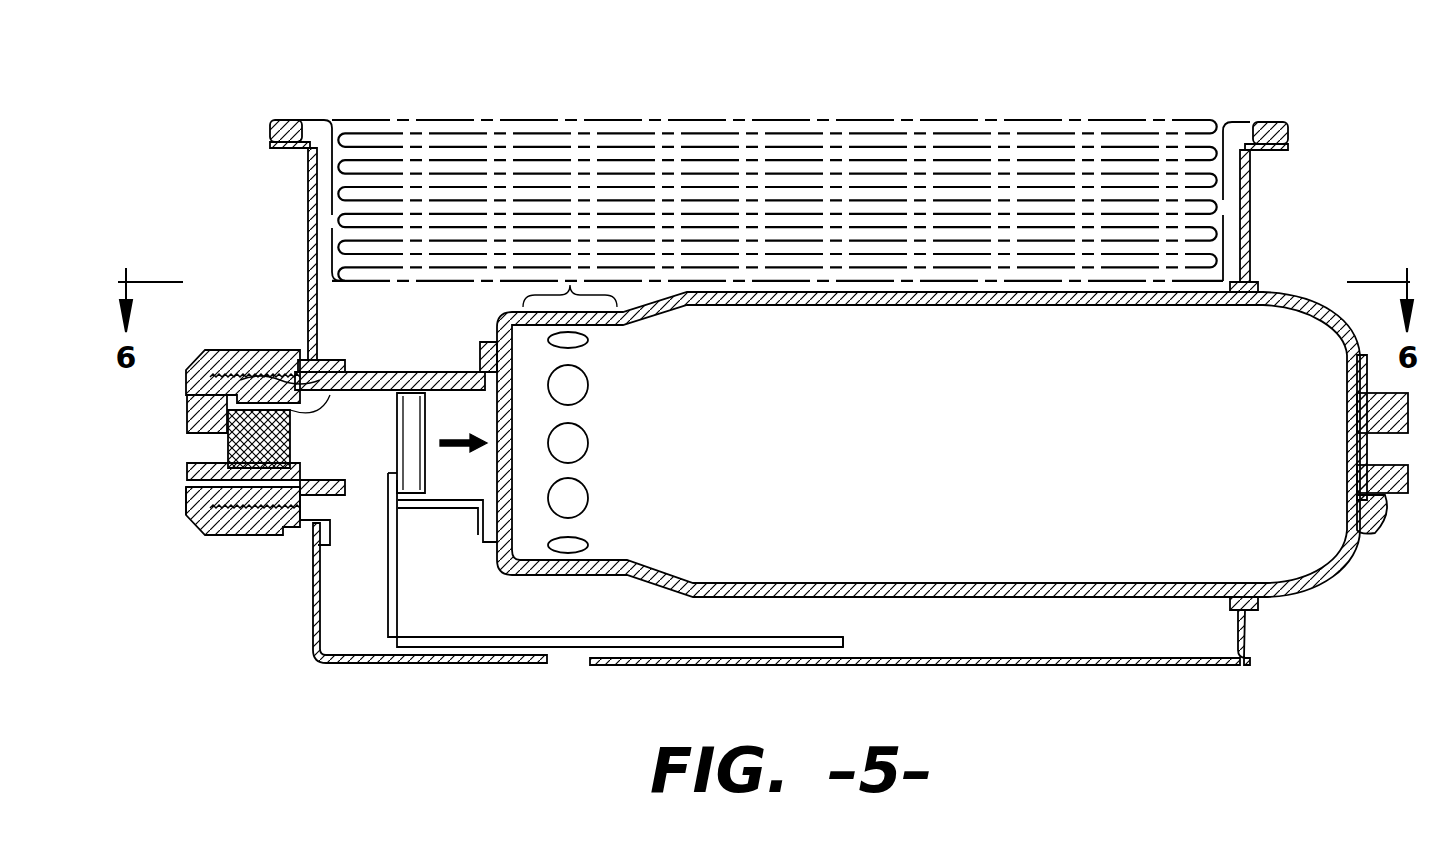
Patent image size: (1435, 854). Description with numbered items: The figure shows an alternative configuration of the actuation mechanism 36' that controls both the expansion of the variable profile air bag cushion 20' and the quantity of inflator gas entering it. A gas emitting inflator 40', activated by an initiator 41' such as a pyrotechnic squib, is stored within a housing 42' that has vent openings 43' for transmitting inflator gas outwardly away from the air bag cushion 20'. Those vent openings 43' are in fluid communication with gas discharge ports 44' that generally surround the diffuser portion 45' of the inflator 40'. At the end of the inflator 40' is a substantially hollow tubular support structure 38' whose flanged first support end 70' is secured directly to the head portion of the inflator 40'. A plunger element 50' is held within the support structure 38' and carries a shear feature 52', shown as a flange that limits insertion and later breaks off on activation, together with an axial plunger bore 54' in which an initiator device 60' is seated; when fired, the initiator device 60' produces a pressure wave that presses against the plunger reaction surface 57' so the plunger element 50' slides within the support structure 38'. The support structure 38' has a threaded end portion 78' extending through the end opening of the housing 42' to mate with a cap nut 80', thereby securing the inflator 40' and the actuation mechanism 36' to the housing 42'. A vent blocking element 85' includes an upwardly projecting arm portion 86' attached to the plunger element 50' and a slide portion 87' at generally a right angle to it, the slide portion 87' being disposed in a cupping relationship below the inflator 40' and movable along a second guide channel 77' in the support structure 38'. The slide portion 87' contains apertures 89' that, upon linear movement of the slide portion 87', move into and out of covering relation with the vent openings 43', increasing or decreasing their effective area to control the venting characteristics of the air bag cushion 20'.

The air bag cushion 20' is at (779, 208).
The actuation mechanism 36' is at (357, 314).
The support structure 38' is at (311, 524).
The gas emitting inflator 40' is at (928, 429).
The initiator 41' is at (1394, 460).
The housing 42' is at (1245, 659).
The vent openings 43' is at (909, 686).
The gas discharge ports 44' is at (607, 488).
The diffuser portion 45' is at (570, 280).
The plunger element 50' is at (442, 479).
The shear feature 52' is at (243, 541).
The axial plunger bore 54' is at (281, 431).
The plunger reaction surface 57' is at (244, 339).
The initiator device 60' is at (177, 432).
The first support end 70' is at (581, 368).
The second guide channel 77' is at (447, 544).
The threaded end portion 78' is at (234, 548).
The cap nut 80' is at (158, 528).
The vent blocking element 85' is at (430, 636).
The arm portion 86' is at (604, 596).
The slide portion 87' is at (783, 672).
The apertures 89' is at (543, 624).